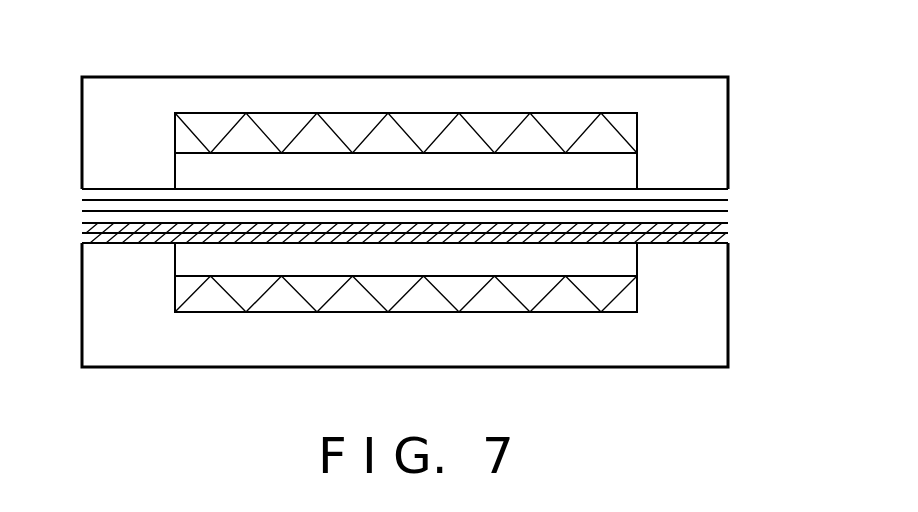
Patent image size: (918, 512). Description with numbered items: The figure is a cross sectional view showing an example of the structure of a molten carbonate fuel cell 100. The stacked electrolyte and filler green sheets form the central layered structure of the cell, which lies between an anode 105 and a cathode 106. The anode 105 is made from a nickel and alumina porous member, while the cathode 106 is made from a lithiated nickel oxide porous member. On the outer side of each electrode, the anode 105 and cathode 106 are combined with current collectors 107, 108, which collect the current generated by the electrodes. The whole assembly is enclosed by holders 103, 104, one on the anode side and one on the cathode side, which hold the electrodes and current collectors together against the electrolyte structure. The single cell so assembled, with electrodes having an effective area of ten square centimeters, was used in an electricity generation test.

The molten carbonate fuel cell 100 is at (687, 188).
The holder 103 is at (720, 102).
The holder 104 is at (717, 303).
The anode 105 is at (625, 167).
The cathode 106 is at (618, 262).
The current collector 107 is at (560, 120).
The current collector 108 is at (573, 305).